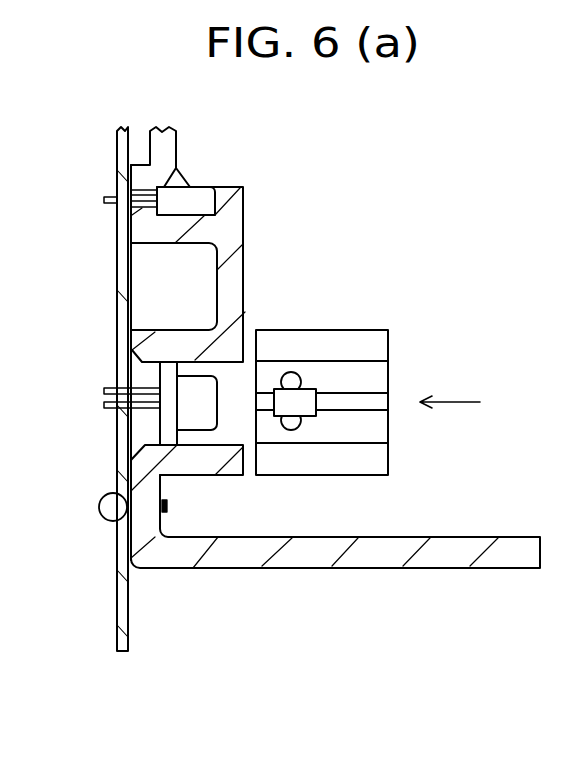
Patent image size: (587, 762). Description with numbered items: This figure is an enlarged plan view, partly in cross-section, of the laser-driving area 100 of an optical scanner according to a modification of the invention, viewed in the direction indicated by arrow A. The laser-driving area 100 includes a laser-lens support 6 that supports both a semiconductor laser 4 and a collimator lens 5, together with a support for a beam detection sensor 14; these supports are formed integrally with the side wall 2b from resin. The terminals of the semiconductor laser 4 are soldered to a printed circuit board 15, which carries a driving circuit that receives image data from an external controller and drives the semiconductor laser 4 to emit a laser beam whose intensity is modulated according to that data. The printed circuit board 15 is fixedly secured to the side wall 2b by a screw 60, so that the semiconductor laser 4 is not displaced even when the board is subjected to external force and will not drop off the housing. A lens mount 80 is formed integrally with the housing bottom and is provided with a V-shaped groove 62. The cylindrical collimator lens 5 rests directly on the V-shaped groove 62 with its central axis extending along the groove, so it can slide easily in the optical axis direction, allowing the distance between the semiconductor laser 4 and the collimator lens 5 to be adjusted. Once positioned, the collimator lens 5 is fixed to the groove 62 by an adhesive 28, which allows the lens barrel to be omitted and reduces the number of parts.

The laser-driving area 100 is at (385, 178).
The lens mount 80 is at (432, 296).
The V-shaped groove 62 is at (368, 425).
The adhesive 28 is at (289, 380).
The collimator lens 5 is at (305, 400).
The beam detection sensor 14 is at (193, 200).
The semiconductor laser 4 is at (165, 376).
The laser-lens support 6 is at (131, 462).
The screw 60 is at (111, 510).
The printed circuit board 15 is at (121, 606).
The side wall 2b is at (225, 555).
The view direction A is at (458, 404).